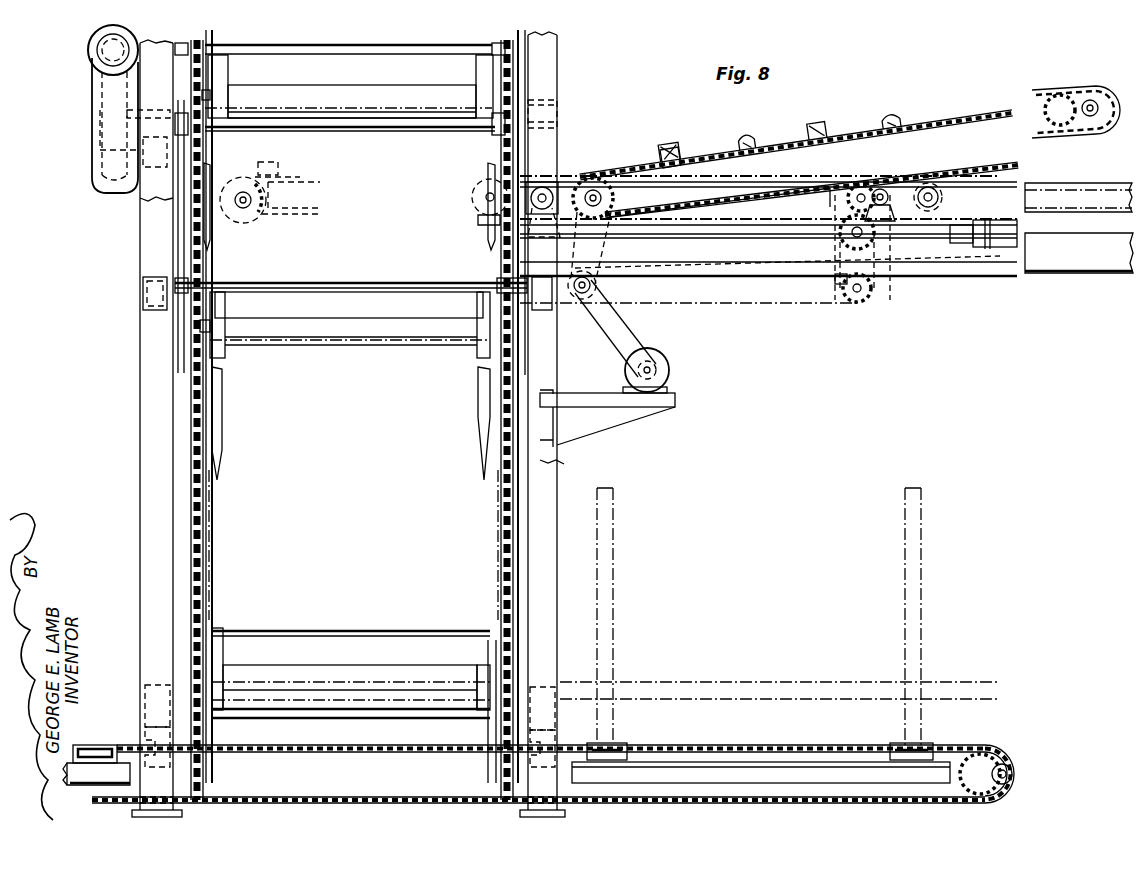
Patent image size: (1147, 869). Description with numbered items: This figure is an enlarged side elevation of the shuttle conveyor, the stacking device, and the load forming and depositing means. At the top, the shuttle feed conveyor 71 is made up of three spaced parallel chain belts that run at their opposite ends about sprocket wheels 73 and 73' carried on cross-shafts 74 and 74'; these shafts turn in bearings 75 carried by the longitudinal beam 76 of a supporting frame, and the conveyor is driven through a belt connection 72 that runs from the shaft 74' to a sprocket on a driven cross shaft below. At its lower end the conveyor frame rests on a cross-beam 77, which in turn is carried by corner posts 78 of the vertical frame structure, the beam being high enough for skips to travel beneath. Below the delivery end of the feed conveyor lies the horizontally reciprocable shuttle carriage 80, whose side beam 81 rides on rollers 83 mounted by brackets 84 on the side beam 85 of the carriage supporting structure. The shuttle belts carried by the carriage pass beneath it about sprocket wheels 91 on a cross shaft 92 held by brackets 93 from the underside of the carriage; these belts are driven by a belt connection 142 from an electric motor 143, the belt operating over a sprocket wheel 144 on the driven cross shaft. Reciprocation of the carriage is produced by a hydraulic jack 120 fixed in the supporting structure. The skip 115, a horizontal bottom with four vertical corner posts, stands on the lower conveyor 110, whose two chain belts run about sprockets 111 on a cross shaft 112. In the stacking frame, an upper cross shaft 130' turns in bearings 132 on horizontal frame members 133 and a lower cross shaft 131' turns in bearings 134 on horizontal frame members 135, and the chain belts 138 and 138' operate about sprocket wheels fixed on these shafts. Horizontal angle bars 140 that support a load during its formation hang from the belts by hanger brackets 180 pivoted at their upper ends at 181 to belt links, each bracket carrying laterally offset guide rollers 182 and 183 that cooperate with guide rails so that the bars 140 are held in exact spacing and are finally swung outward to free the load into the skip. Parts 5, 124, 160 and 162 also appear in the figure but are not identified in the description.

The conveyor belt 5 is at (816, 130).
The conveyor 71 is at (984, 125).
The belt connection 72 is at (600, 248).
The sprocket wheels 73 is at (1073, 83).
The sprocket wheels 73' is at (623, 168).
The cross-shaft 74 is at (1105, 81).
The cross-shaft 74' is at (693, 149).
The bearings 75 is at (600, 252).
The longitudinal beam 76 is at (1052, 96).
The cross-beam 77 is at (548, 281).
The corner posts 78 is at (550, 472).
The shuttle carriage 80 is at (1106, 184).
The side beam 81 is at (1070, 194).
The rollers 83 is at (546, 189).
The brackets 84 is at (548, 232).
The side beam 85 is at (1074, 266).
The sprocket wheels 91 is at (482, 196).
The cross shaft 92 is at (880, 250).
The brackets 93 is at (848, 225).
The conveyor 110 is at (723, 749).
The sprockets 111 is at (1018, 760).
The cross shaft 112 is at (1012, 773).
The skip 115 is at (922, 600).
The hydraulic jack 120 is at (1000, 230).
The axis lines 124 is at (542, 690).
The cross shaft 130' is at (352, 134).
The cross shaft 131' is at (351, 682).
The bearings 132 is at (140, 108).
The horizontal frame members 133 is at (108, 162).
The bearings 134 is at (146, 686).
The horizontal frame members 135 is at (146, 727).
The sprocket chain belt 138 is at (228, 415).
The sprocket chain belt 138' is at (482, 415).
The angle bars 140 is at (373, 103).
The driving belt connection 142 is at (628, 320).
The electric motor 143 is at (668, 366).
The sprocket wheel 144 is at (602, 286).
The bracket 160 is at (100, 144).
The roller 162 is at (104, 48).
The hanger brackets 180 is at (218, 310).
The pivot 181 is at (210, 85).
The guide rollers 182 is at (214, 99).
The guide rollers 183 is at (222, 122).